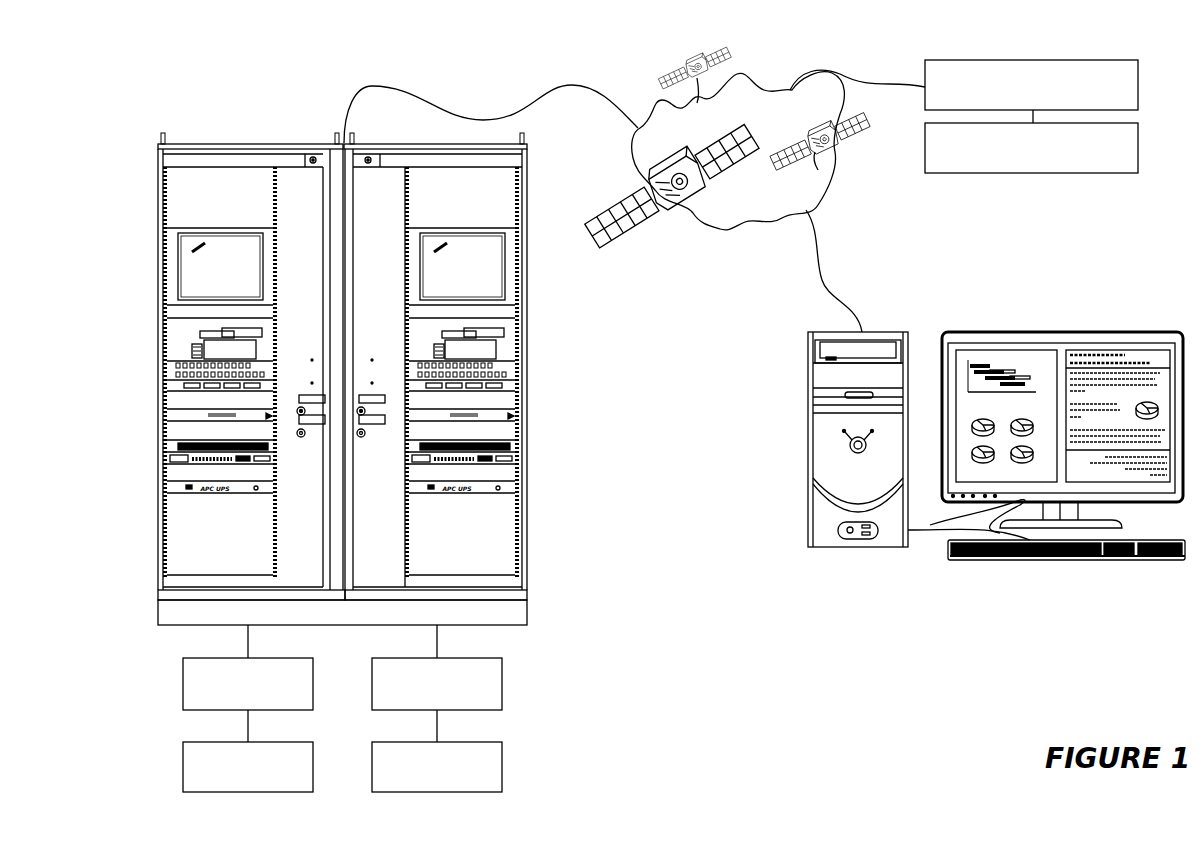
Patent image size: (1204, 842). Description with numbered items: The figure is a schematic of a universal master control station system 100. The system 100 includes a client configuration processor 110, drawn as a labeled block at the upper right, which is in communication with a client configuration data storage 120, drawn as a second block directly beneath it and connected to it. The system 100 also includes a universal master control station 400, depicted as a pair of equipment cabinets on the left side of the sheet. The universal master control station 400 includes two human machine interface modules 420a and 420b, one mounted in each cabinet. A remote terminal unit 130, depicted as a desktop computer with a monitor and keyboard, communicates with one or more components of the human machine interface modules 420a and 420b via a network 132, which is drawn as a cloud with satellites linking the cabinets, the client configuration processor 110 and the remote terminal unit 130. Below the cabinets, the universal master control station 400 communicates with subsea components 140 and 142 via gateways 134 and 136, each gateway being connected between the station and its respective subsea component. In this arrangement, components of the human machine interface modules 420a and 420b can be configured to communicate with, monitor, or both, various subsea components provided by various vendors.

The universal master control station system 100 is at (153, 72).
The universal master control station 400 is at (243, 143).
The human machine interface module 420a is at (195, 352).
The human machine interface module 420b is at (496, 350).
The network 132 is at (720, 229).
The client configuration processor 110 is at (1138, 83).
The client configuration data storage 120 is at (1138, 146).
The remote terminal unit 130 is at (808, 418).
The gateway 134 is at (183, 682).
The gateway 136 is at (502, 682).
The subsea component 140 is at (183, 766).
The subsea component 142 is at (502, 766).